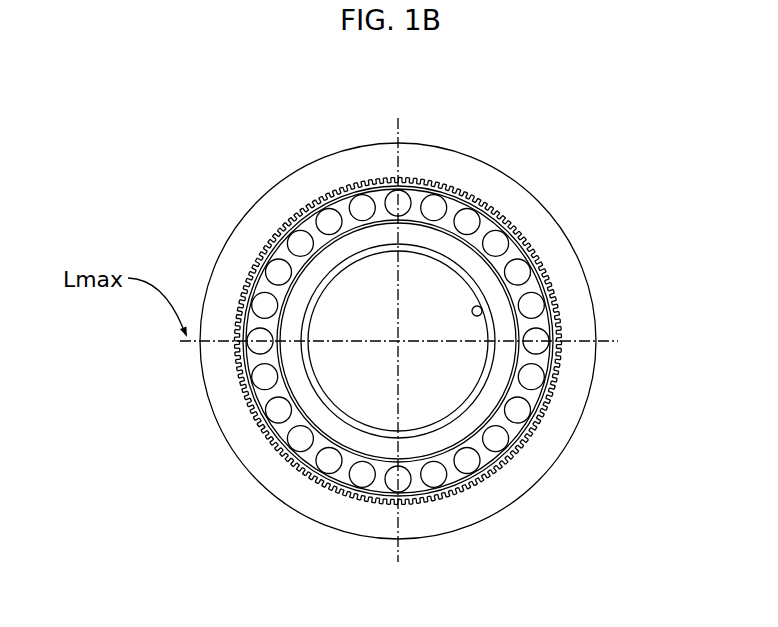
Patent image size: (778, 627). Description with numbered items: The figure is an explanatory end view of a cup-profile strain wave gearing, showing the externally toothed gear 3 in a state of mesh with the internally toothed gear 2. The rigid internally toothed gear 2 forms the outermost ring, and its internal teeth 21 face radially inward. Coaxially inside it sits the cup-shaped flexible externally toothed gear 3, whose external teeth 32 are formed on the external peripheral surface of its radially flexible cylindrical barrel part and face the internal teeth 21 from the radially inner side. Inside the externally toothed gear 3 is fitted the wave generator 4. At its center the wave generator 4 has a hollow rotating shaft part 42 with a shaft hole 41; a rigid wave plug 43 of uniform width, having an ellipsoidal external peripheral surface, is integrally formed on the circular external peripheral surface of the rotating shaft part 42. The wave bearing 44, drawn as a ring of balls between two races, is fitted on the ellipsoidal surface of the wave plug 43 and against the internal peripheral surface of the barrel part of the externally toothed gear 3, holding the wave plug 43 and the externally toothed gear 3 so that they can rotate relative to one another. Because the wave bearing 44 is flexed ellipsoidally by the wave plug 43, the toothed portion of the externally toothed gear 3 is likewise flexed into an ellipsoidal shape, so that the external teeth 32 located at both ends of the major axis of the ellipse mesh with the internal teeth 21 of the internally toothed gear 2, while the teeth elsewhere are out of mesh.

The internally toothed gear 2 is at (222, 247).
The internal teeth 21 is at (298, 212).
The externally toothed gear 3 is at (383, 286).
The external teeth 32 is at (323, 198).
The wave generator 4 is at (439, 297).
The wave bearing 44 is at (460, 200).
The wave plug 43 is at (465, 265).
The rotating shaft part 42 is at (485, 289).
The shaft hole 41 is at (466, 329).